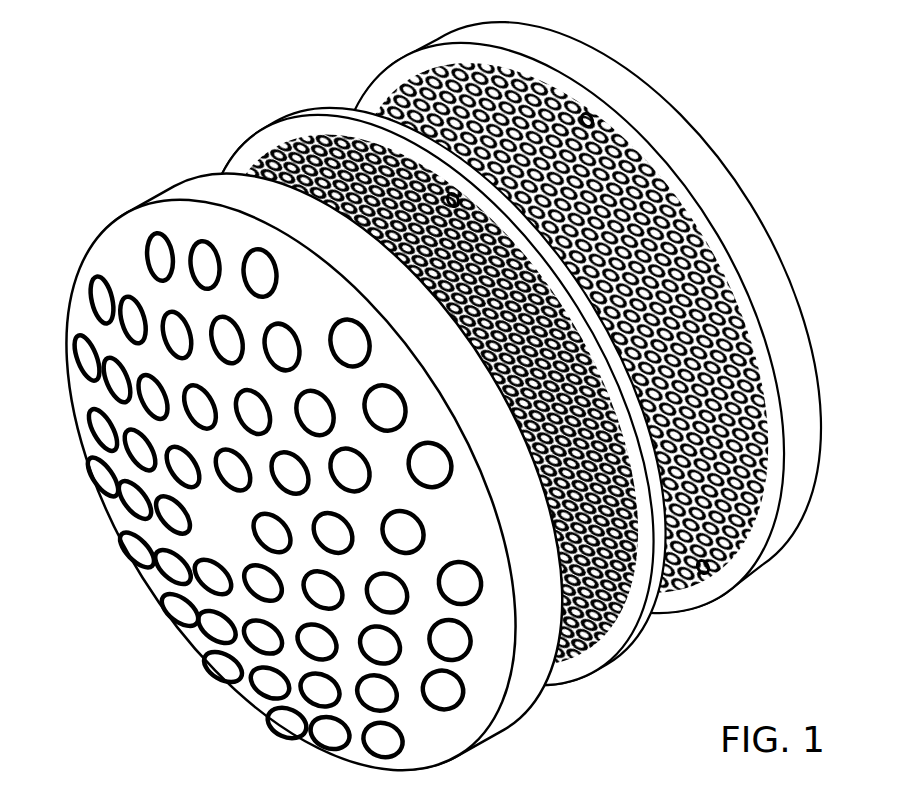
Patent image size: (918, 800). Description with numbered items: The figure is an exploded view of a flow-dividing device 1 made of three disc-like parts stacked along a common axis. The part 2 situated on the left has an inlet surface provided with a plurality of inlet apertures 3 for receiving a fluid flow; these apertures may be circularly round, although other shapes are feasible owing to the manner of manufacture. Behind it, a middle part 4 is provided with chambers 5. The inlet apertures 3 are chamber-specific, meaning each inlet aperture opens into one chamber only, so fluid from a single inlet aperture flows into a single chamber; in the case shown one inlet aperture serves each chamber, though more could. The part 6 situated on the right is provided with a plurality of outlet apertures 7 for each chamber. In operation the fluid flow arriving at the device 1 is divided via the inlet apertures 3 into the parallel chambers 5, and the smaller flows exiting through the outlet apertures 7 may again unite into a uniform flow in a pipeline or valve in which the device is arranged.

The device 1 is at (146, 61).
The part situated on the left 2 is at (498, 728).
The inlet apertures 3 is at (186, 516).
The middle part 4 is at (620, 660).
The chambers 5 is at (322, 148).
The part situated on the right 6 is at (773, 557).
The outlet apertures 7 is at (626, 154).